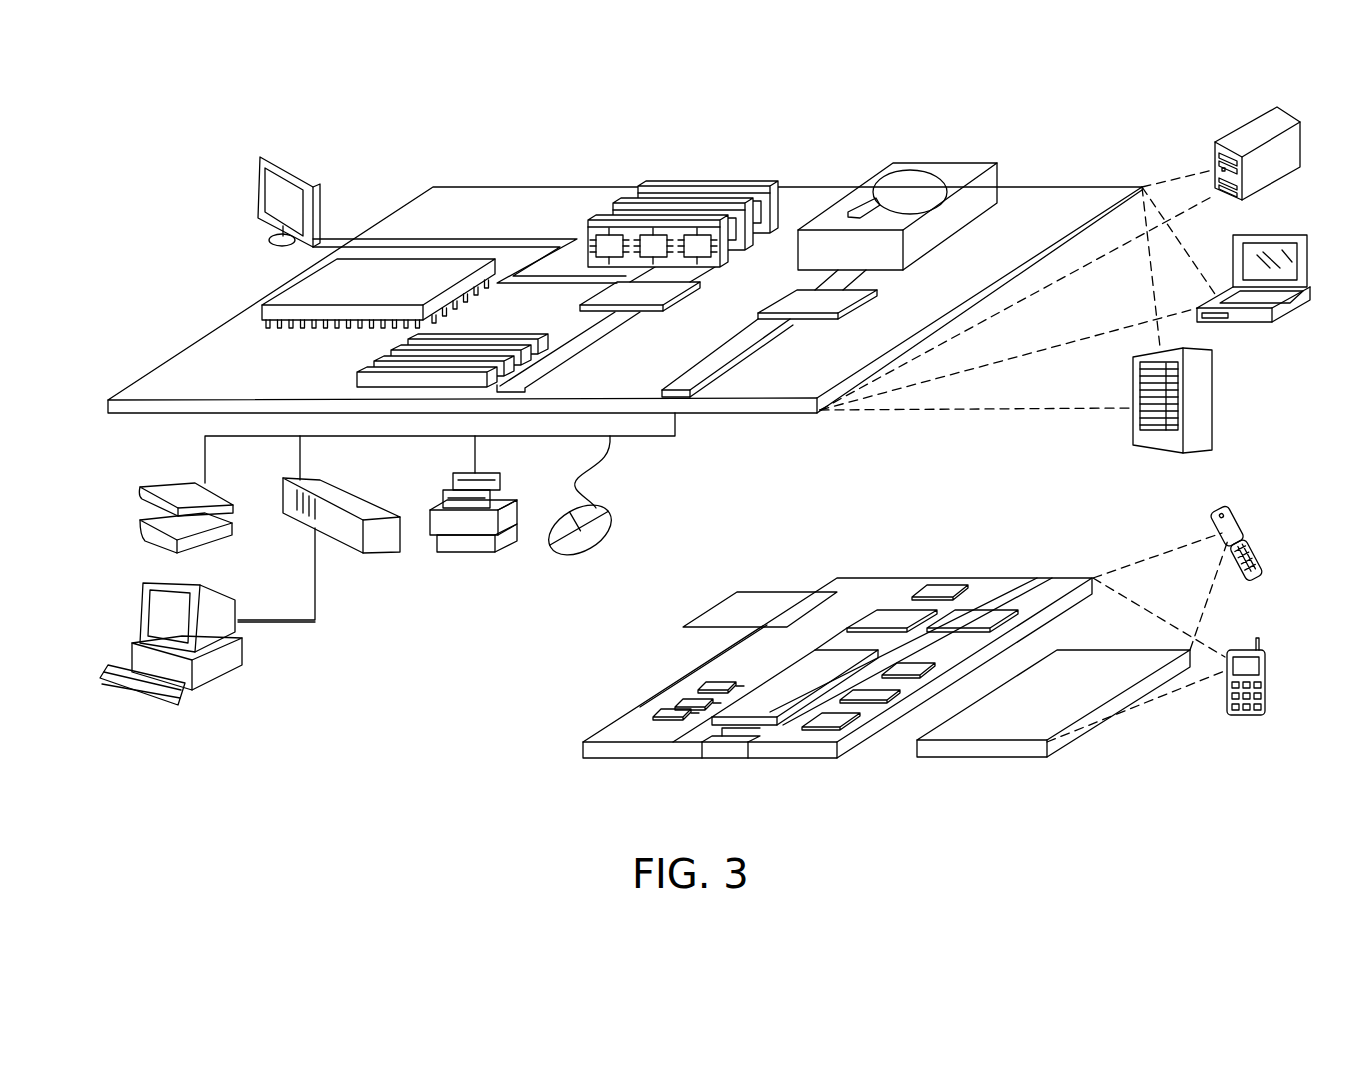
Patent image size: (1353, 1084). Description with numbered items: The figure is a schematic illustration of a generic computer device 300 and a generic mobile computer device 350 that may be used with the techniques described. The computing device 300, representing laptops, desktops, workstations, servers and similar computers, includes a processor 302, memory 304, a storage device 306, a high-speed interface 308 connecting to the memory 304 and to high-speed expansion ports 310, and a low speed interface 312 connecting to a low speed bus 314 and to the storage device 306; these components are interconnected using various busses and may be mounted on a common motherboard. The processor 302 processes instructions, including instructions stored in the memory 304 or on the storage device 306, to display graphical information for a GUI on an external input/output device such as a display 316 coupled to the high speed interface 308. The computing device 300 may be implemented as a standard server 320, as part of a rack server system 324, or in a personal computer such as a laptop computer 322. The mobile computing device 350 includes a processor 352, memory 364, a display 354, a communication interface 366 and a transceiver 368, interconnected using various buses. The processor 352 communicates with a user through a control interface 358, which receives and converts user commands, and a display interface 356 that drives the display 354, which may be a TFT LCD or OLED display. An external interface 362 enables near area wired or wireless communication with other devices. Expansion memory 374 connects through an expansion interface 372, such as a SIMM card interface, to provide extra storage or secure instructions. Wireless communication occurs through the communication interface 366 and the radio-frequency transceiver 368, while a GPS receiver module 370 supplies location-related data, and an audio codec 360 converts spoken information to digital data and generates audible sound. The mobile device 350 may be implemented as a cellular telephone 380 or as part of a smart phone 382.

The generic computer device 300 is at (383, 128).
The processor 302 is at (286, 290).
The memory 304 is at (716, 180).
The storage device 306 is at (941, 165).
The high-speed interface 308 is at (652, 294).
The high-speed expansion ports 310 is at (378, 362).
The low speed interface 312 is at (793, 298).
The low speed bus 314 is at (681, 386).
The display 316 is at (263, 158).
The standard server 320 is at (1236, 133).
The laptop computer 322 is at (1288, 230).
The rack server system 324 is at (1212, 399).
The generic mobile computer device 350 is at (532, 774).
The processor 352 is at (766, 695).
The display 354 is at (1088, 663).
The display interface 356 is at (840, 718).
The control interface 358 is at (875, 697).
The audio codec 360 is at (915, 665).
The external interface 362 is at (727, 748).
The memory 364 is at (682, 702).
The communication interface 366 is at (890, 610).
The transceiver 368 is at (982, 612).
The GPS receiver module 370 is at (942, 588).
The expansion interface 372 is at (818, 590).
The expansion memory 374 is at (738, 590).
The cellular telephone 380 is at (1233, 505).
The smart phone 382 is at (1240, 648).